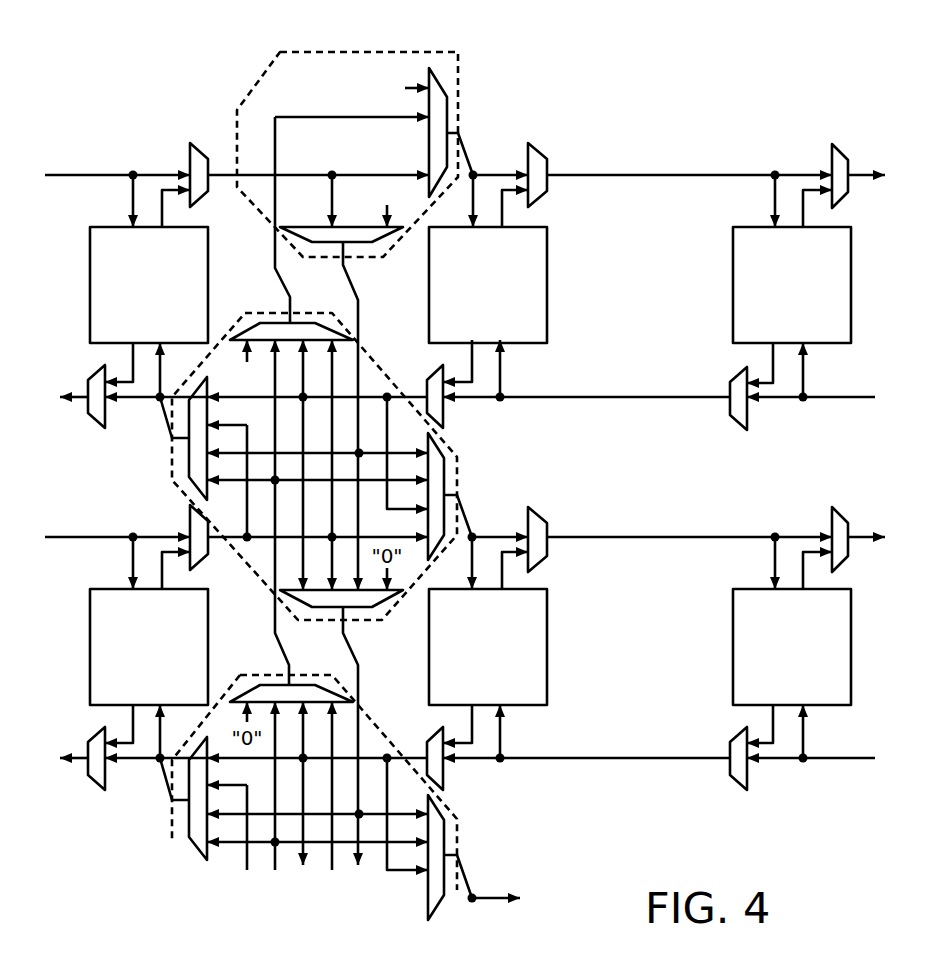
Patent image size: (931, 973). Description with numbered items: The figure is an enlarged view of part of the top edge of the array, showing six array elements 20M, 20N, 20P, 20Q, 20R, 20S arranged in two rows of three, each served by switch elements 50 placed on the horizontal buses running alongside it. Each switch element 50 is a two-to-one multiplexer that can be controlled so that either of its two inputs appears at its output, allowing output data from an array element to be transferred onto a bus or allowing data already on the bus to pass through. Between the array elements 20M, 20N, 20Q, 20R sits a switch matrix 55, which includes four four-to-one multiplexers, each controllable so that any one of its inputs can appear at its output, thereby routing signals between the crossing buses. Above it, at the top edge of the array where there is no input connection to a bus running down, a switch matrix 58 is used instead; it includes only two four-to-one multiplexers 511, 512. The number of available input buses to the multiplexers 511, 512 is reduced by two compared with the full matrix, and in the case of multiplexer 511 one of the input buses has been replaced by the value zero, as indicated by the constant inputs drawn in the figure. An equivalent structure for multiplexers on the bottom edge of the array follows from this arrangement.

The switch matrix 58 is at (380, 296).
The 4:1 multiplexer 511 is at (447, 113).
The 4:1 multiplexer 512 is at (356, 243).
The switch element 50 is at (540, 147).
The switch matrix 55 is at (458, 490).
The array element 20M is at (149, 285).
The array element 20N is at (488, 285).
The array element 20P is at (792, 285).
The array element 20Q is at (149, 647).
The array element 20R is at (488, 647).
The array element 20S is at (792, 647).